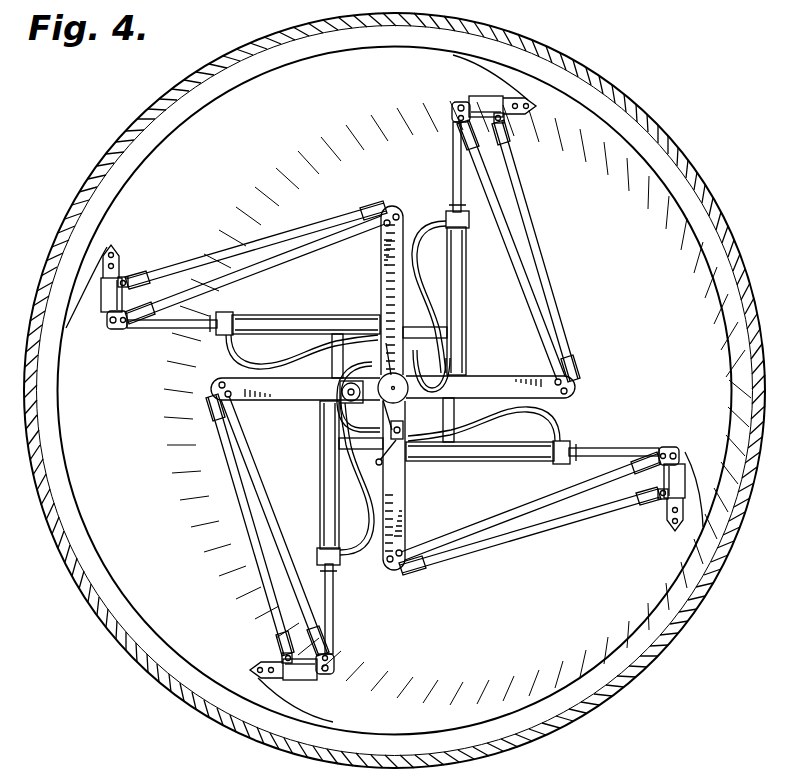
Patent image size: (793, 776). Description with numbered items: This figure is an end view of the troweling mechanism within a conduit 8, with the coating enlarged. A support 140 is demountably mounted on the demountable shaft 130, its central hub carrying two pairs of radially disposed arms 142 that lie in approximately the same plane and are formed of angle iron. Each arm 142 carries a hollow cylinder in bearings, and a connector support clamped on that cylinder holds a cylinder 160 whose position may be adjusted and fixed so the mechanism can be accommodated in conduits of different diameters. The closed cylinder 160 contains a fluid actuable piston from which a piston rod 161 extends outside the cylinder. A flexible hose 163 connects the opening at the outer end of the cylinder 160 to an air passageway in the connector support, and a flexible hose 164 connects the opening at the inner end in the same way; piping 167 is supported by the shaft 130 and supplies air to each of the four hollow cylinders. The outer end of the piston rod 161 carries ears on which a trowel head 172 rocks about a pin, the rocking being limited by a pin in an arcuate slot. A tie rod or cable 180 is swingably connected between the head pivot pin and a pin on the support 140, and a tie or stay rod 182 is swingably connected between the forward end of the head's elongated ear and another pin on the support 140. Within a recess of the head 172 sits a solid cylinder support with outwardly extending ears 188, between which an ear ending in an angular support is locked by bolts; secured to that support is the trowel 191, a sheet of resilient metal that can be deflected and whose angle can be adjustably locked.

The pipe 8 is at (687, 160).
The demountable shaft 130 is at (375, 343).
The support 140 is at (283, 416).
The arm 142 is at (233, 377).
The cylinder 160 is at (283, 317).
The piston rod 161 is at (173, 327).
The flexible hose 163 is at (247, 362).
The flexible hose 164 is at (333, 369).
The piping 167 is at (382, 464).
The trowel head 172 is at (103, 300).
The tie rod or cable 180 is at (253, 270).
The tie or stay rod 182 is at (227, 248).
The outwardly extending ears 188 is at (118, 258).
The trowel 191 is at (100, 248).